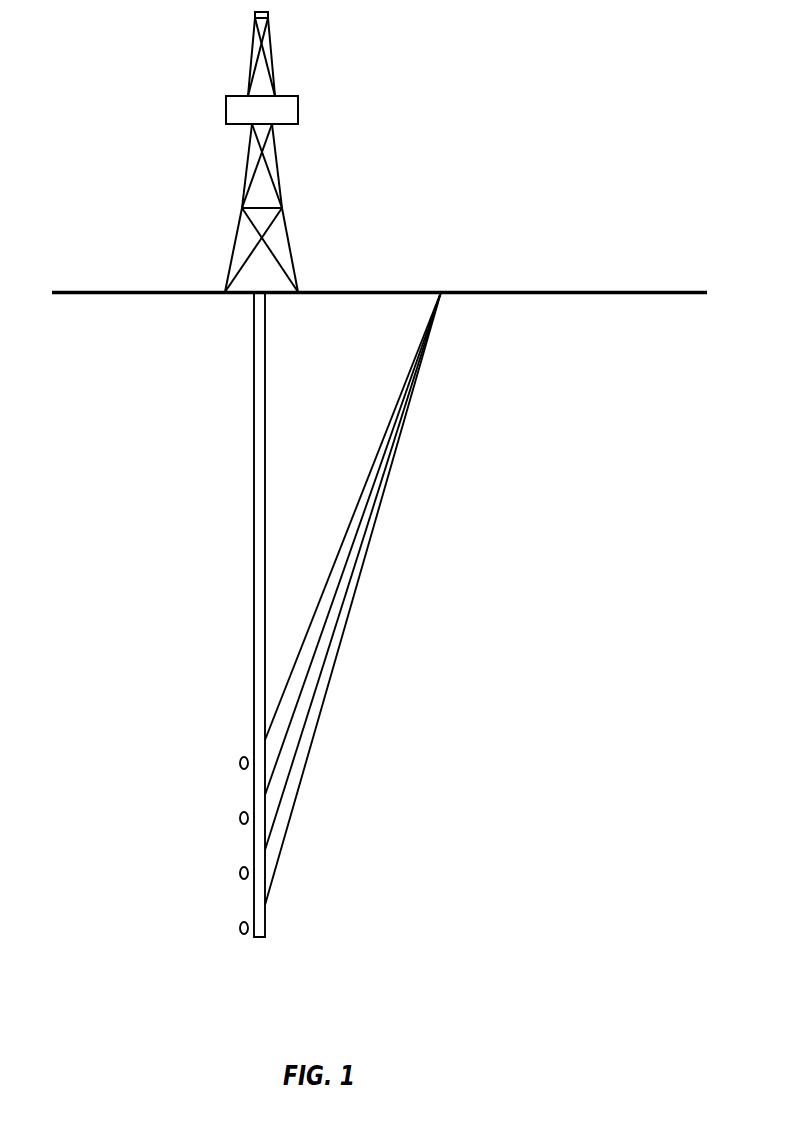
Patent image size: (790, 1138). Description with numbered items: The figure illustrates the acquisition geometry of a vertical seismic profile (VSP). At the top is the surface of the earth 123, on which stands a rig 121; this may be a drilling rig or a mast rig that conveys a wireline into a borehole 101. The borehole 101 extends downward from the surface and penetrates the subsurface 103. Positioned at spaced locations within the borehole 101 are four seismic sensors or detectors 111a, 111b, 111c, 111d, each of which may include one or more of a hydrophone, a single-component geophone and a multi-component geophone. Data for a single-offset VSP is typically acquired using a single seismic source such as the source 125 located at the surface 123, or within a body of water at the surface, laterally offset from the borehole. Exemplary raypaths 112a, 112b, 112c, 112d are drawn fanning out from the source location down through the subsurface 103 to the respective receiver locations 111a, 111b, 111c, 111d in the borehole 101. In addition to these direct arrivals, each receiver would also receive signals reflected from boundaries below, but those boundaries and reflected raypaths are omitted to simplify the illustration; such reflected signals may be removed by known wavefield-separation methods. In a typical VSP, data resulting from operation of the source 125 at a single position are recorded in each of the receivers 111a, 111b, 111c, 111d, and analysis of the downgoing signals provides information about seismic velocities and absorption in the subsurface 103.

The borehole 101 is at (254, 392).
The subsurface 103 is at (103, 470).
The seismic sensor 111a is at (240, 763).
The seismic sensor 111b is at (240, 818).
The seismic sensor 111c is at (240, 873).
The seismic sensor 111d is at (240, 928).
The raypath 112a is at (375, 460).
The raypath 112b is at (341, 577).
The raypath 112c is at (343, 606).
The raypath 112d is at (328, 687).
The rig 121 is at (281, 96).
The surface of the earth 123 is at (578, 292).
The seismic source 125 is at (441, 292).